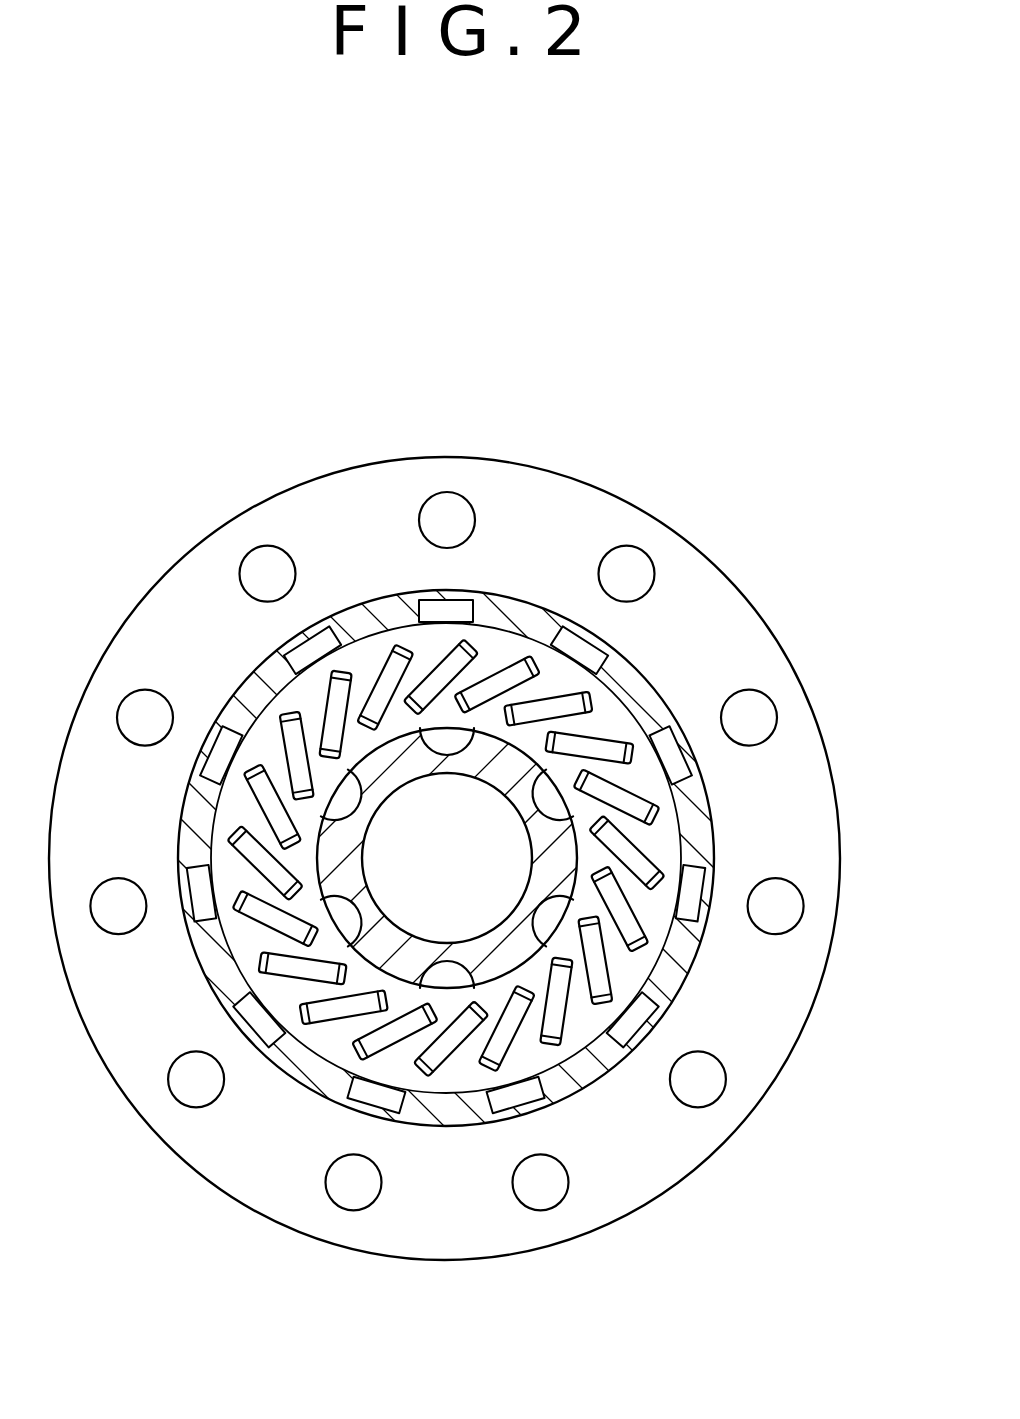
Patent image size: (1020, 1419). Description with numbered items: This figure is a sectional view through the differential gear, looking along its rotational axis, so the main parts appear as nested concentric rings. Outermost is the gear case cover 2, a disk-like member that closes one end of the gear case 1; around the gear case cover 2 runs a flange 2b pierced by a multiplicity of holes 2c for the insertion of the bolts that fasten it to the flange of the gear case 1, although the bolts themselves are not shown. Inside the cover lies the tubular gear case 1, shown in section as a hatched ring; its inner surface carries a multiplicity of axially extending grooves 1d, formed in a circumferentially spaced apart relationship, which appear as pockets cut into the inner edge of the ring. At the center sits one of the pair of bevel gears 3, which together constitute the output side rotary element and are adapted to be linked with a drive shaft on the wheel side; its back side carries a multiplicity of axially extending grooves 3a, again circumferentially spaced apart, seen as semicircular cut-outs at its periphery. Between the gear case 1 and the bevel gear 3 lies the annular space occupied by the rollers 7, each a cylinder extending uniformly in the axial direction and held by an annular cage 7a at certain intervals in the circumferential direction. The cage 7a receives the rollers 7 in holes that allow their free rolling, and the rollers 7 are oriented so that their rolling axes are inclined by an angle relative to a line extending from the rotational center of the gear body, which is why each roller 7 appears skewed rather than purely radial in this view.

The gear case 1 is at (273, 1058).
The axially extending grooves 1d is at (392, 1127).
The gear case cover 2 is at (745, 590).
The flange 2b is at (561, 505).
The holes 2c is at (445, 510).
The bevel gears 3 is at (532, 939).
The axially extending grooves 3a is at (547, 923).
The rollers 7 is at (633, 862).
The annular cage 7a is at (654, 884).